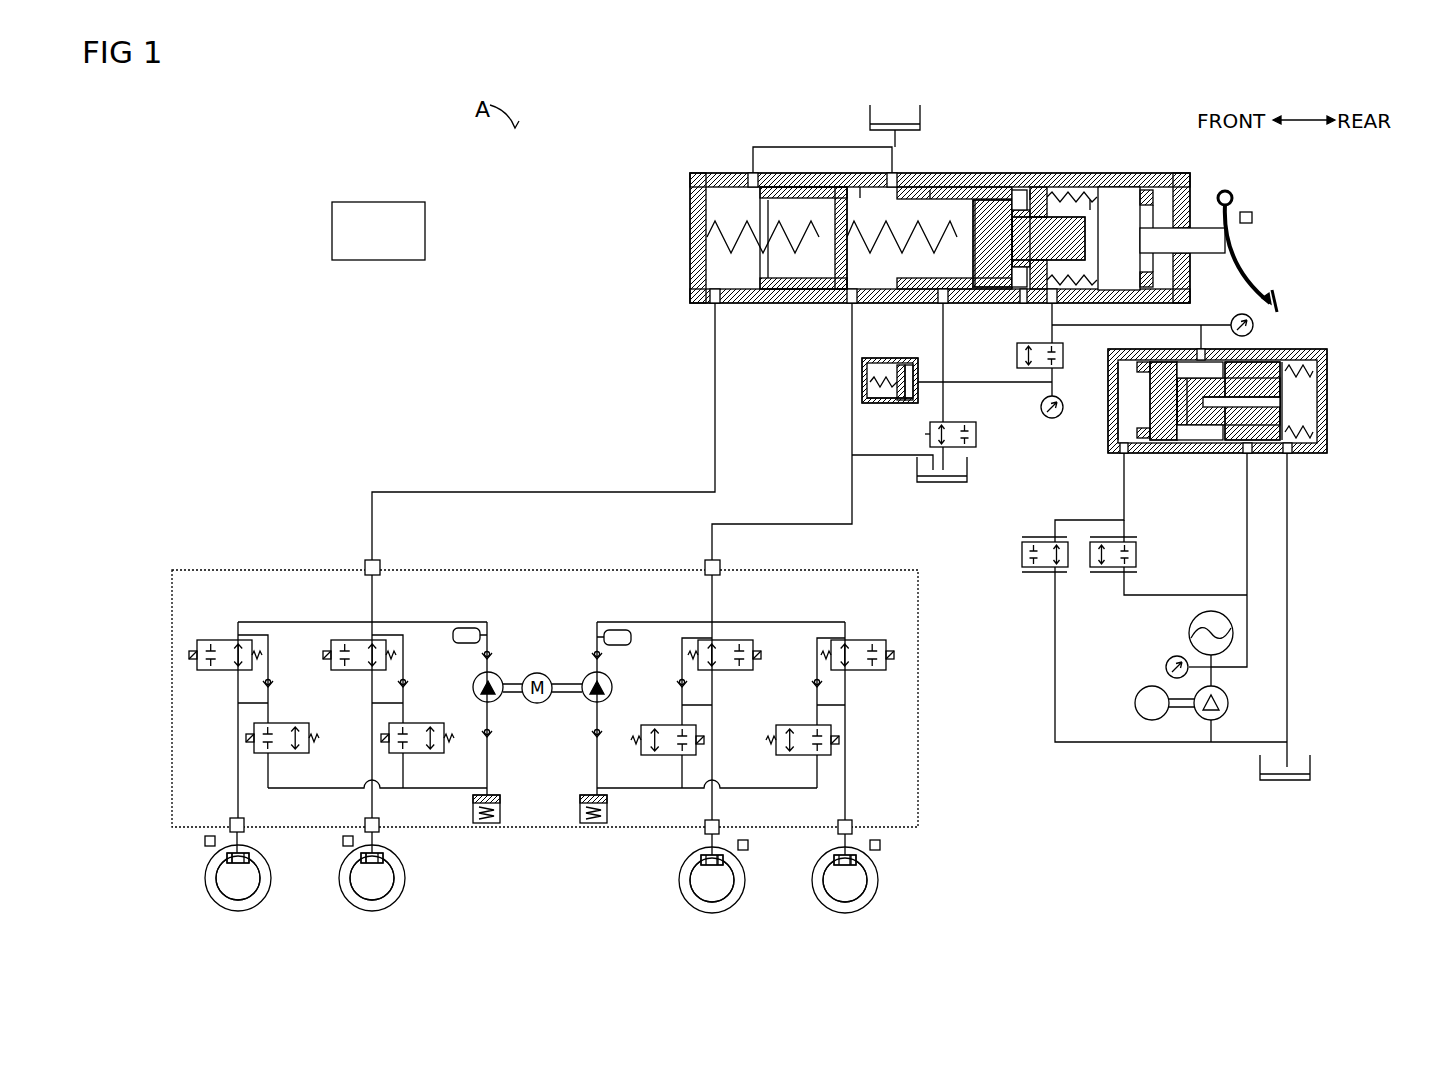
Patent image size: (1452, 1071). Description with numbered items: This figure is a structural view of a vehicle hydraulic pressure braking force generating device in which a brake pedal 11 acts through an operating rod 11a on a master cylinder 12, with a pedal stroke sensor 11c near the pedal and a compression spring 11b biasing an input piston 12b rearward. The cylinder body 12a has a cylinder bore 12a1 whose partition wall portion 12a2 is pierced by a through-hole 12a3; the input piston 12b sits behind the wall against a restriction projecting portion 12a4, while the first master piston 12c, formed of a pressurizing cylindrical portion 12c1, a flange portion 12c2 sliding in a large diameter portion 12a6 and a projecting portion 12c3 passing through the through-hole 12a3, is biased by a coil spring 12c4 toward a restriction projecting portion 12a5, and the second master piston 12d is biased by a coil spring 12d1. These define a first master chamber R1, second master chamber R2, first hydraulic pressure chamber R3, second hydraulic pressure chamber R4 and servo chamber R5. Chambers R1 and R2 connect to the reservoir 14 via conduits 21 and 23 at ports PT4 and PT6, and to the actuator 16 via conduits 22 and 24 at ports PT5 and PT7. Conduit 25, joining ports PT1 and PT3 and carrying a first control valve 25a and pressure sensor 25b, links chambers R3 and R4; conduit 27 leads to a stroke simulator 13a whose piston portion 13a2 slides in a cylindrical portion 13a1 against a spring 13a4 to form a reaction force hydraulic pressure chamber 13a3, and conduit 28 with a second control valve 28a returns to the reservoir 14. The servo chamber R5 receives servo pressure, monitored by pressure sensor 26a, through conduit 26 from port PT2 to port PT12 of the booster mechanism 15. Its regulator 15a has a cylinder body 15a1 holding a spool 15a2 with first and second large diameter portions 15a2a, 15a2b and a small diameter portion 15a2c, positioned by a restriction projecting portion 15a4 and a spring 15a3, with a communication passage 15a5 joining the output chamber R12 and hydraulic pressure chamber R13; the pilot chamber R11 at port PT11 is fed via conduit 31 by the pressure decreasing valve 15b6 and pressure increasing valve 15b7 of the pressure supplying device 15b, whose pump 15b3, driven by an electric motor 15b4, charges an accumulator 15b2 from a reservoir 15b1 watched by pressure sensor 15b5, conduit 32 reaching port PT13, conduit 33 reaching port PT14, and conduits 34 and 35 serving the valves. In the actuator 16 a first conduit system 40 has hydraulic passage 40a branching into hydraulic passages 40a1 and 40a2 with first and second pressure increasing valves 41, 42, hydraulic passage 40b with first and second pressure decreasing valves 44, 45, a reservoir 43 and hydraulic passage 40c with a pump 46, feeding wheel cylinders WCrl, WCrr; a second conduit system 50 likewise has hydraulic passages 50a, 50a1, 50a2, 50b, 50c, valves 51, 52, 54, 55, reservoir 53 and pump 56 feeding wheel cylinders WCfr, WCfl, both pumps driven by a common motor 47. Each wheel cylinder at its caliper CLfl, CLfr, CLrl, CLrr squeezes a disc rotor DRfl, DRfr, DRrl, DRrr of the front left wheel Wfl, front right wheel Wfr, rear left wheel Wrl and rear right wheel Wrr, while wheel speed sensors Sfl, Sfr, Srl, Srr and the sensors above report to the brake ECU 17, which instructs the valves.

The brake pedal 11 is at (1238, 258).
The operating rod 11a is at (1240, 241).
The compression spring 11b is at (1070, 195).
The pedal stroke sensor 11c is at (1252, 218).
The master cylinder 12 is at (687, 191).
The cylinder body 12a is at (692, 233).
The cylinder bore 12a1 is at (860, 192).
The partition wall portion 12a2 is at (1040, 203).
The through-hole 12a3 is at (1050, 222).
The restriction projecting portion 12a4 is at (1145, 195).
The restriction projecting portion 12a5 is at (1030, 198).
The large diameter portion 12a6 is at (965, 190).
The input piston 12b is at (1122, 200).
The first master piston 12c is at (913, 288).
The pressurizing cylindrical portion 12c1 is at (932, 190).
The flange portion 12c2 is at (1012, 200).
The projecting portion 12c3 is at (1090, 200).
The coil spring 12c4 is at (890, 263).
The second master piston 12d is at (798, 285).
The coil spring 12d1 is at (775, 253).
The stroke simulator 13a is at (857, 404).
The cylindrical portion 13a1 is at (862, 385).
The piston portion 13a2 is at (892, 415).
The reaction force hydraulic pressure chamber 13a3 is at (898, 363).
The spring 13a4 is at (868, 378).
The reservoir 14 is at (948, 485).
The booster mechanism 15 is at (1391, 533).
The regulator 15a is at (1342, 403).
The cylinder body 15a1 is at (1300, 415).
The spool 15a2 is at (1271, 431).
The first large diameter portion 15a2a is at (1265, 458).
The second large diameter portion 15a2b is at (1158, 455).
The small diameter portion 15a2c is at (1250, 460).
The spring 15a3 is at (1300, 360).
The restriction projecting portion 15a4 is at (1140, 448).
The communication passage 15a5 is at (1320, 400).
The pressure supplying device 15b is at (1319, 620).
The reservoir 15b1 is at (1308, 766).
The accumulator 15b2 is at (1190, 633).
The pump 15b3 is at (1228, 703).
The electric motor 15b4 is at (1135, 703).
The pressure sensor 15b5 is at (1165, 667).
The pressure decreasing valve 15b6 is at (1040, 570).
The pressure increasing valve 15b7 is at (1105, 570).
The actuator 16 is at (840, 567).
The brake ECU 17 is at (385, 200).
The conduit 21 is at (892, 134).
The conduit 22 is at (785, 526).
The conduit 23 is at (775, 148).
The conduit 24 is at (535, 493).
The conduit 25 is at (1040, 405).
The first control valve 25a is at (1060, 355).
The pressure sensor 25b is at (1062, 398).
The conduit 26 is at (1195, 325).
The pressure sensor 26a is at (1253, 325).
The conduit 27 is at (930, 382).
The conduit 28 is at (946, 404).
The second control valve 28a is at (977, 435).
The conduit 31 is at (1124, 522).
The conduit 32 is at (1247, 590).
The conduit 33 is at (1288, 676).
The conduit 34 is at (1055, 650).
The conduit 35 is at (1178, 596).
The first conduit system 40 is at (824, 606).
The hydraulic passage 40a is at (715, 610).
The hydraulic passage 40a1 is at (740, 703).
The hydraulic passage 40a2 is at (845, 715).
The hydraulic passage 40b is at (742, 790).
The hydraulic passage 40c is at (605, 733).
The first pressure increasing valve 41 is at (752, 650).
The second pressure increasing valve 42 is at (852, 640).
The reservoir 43 is at (595, 825).
The first pressure decreasing valve 44 is at (668, 723).
The second pressure decreasing valve 45 is at (800, 723).
The pump 46 is at (612, 685).
The motor 47 is at (540, 673).
The second conduit system 50 is at (236, 606).
The hydraulic passage 50a is at (372, 606).
The hydraulic passage 50a1 is at (372, 712).
The hydraulic passage 50a2 is at (238, 712).
The hydraulic passage 50b is at (340, 788).
The hydraulic passage 50c is at (485, 733).
The first pressure increasing valve 51 is at (331, 650).
The second pressure increasing valve 52 is at (230, 640).
The reservoir 53 is at (488, 825).
The first pressure decreasing valve 54 is at (420, 723).
The second pressure decreasing valve 55 is at (283, 723).
The pump 56 is at (475, 685).
The port PT1 is at (1055, 305).
The port PT2 is at (1017, 358).
The port PT3 is at (943, 305).
The port PT4 is at (890, 172).
The port PT5 is at (850, 305).
The port PT6 is at (752, 172).
The port PT7 is at (715, 305).
The port PT11 is at (1122, 455).
The port PT12 is at (1200, 345).
The port PT13 is at (1255, 458).
The port PT14 is at (1292, 455).
The first master chamber R1 is at (875, 280).
The second master chamber R2 is at (750, 282).
The first hydraulic pressure chamber R3 is at (1090, 275).
The second hydraulic pressure chamber R4 is at (970, 305).
The servo chamber R5 is at (1022, 305).
The pilot chamber R11 is at (1120, 415).
The output chamber R12 is at (1207, 433).
The hydraulic pressure chamber R13 is at (1320, 427).
The front left wheel Wfl is at (215, 905).
The front right wheel Wfr is at (352, 905).
The rear left wheel Wrl is at (732, 908).
The rear right wheel Wrr is at (870, 908).
The wheel cylinder WCfl is at (215, 878).
The wheel cylinder WCfr is at (350, 878).
The wheel cylinder WCrl is at (728, 877).
The wheel cylinder WCrr is at (868, 877).
The caliper CLfl is at (227, 860).
The caliper CLfr is at (361, 860).
The caliper CLrl is at (723, 860).
The caliper CLrr is at (856, 860).
The disc rotor DRfl is at (215, 890).
The disc rotor DRfr is at (350, 890).
The disc rotor DRrl is at (728, 890).
The disc rotor DRrr is at (867, 890).
The wheel speed sensor Sfl is at (205, 840).
The wheel speed sensor Sfr is at (343, 840).
The wheel speed sensor Srl is at (748, 845).
The wheel speed sensor Srr is at (880, 845).